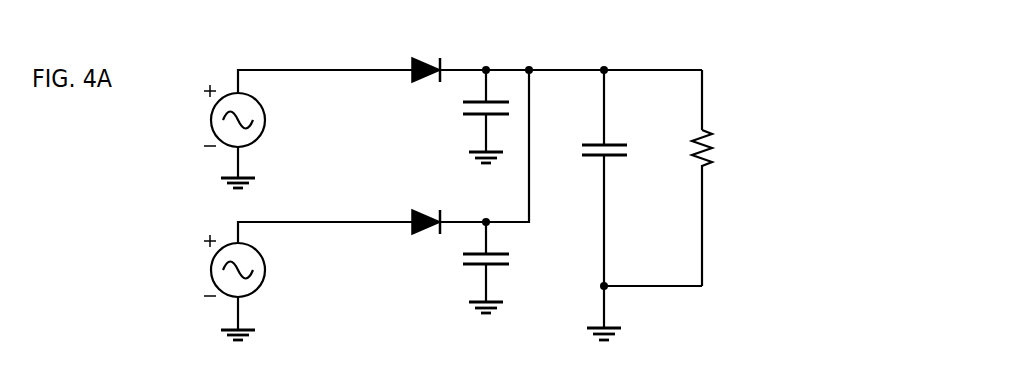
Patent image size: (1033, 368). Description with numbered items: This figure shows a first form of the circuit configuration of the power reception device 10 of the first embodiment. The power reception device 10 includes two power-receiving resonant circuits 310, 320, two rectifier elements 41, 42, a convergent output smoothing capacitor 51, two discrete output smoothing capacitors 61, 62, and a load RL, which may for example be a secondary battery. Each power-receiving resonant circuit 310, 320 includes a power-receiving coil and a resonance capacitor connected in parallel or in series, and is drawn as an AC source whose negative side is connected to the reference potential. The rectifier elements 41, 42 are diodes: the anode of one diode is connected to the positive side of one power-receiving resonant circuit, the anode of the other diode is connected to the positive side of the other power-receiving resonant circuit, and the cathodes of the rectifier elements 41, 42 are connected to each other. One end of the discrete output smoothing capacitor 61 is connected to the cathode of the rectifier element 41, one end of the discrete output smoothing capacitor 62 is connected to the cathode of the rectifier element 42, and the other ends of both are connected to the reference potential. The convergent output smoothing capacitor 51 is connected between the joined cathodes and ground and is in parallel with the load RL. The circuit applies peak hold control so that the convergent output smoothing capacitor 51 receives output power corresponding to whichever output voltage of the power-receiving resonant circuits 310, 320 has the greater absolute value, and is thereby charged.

The power reception device 10 is at (711, 24).
The power-receiving resonant circuit 310 is at (272, 108).
The power-receiving resonant circuit 320 is at (272, 256).
The rectifier element 41 is at (434, 51).
The rectifier element 42 is at (431, 202).
The discrete output smoothing capacitor 61 is at (452, 106).
The discrete output smoothing capacitor 62 is at (452, 258).
The convergent output smoothing capacitor 51 is at (623, 133).
The load RL is at (724, 126).